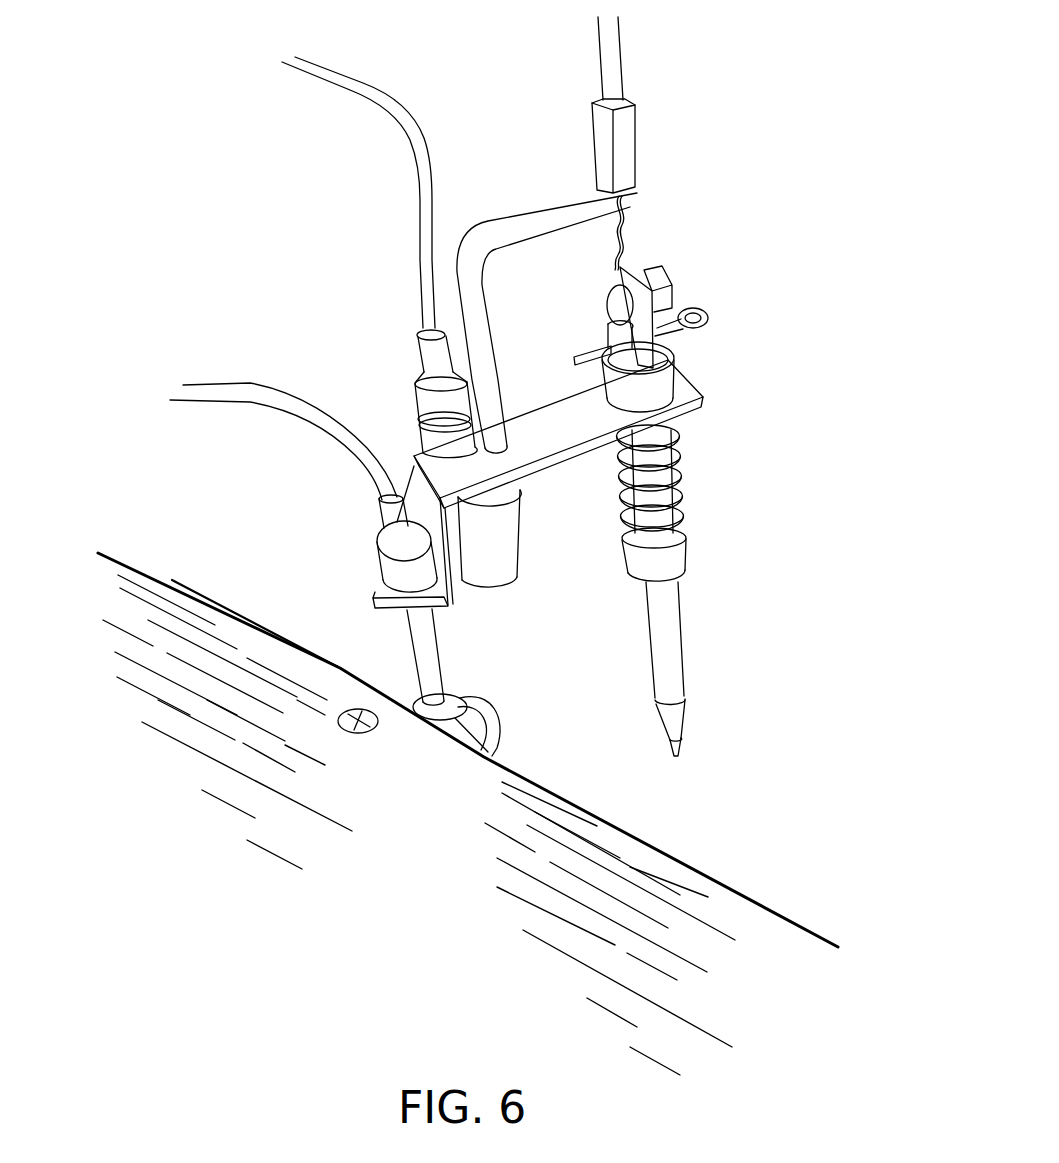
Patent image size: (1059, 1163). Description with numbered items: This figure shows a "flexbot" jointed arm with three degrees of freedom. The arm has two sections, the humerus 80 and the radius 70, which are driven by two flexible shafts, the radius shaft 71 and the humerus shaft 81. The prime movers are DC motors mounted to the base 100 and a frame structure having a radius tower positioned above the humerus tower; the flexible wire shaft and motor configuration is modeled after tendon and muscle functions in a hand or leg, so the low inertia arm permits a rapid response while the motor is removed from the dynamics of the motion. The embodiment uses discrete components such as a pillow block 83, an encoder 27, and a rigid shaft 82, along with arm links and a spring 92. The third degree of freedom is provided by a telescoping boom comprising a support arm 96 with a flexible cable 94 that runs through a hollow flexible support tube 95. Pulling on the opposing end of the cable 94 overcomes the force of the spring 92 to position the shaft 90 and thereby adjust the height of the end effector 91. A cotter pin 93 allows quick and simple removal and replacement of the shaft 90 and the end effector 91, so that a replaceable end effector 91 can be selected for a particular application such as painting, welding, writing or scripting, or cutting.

The encoder 27 is at (514, 540).
The radius section 70 is at (563, 400).
The radius shaft 71 is at (352, 92).
The humerus section 80 is at (453, 593).
The humerus shaft 81 is at (252, 383).
The rigid shaft 82 is at (410, 652).
The pillow block 83 is at (492, 714).
The shaft 90 is at (683, 638).
The end effector 91 is at (670, 753).
The spring 92 is at (682, 470).
The cotter pin 93 is at (708, 318).
The flexible cable 94 is at (627, 227).
The hollow flexible support tube 95 is at (623, 67).
The support arm 96 is at (533, 210).
The base 100 is at (445, 849).